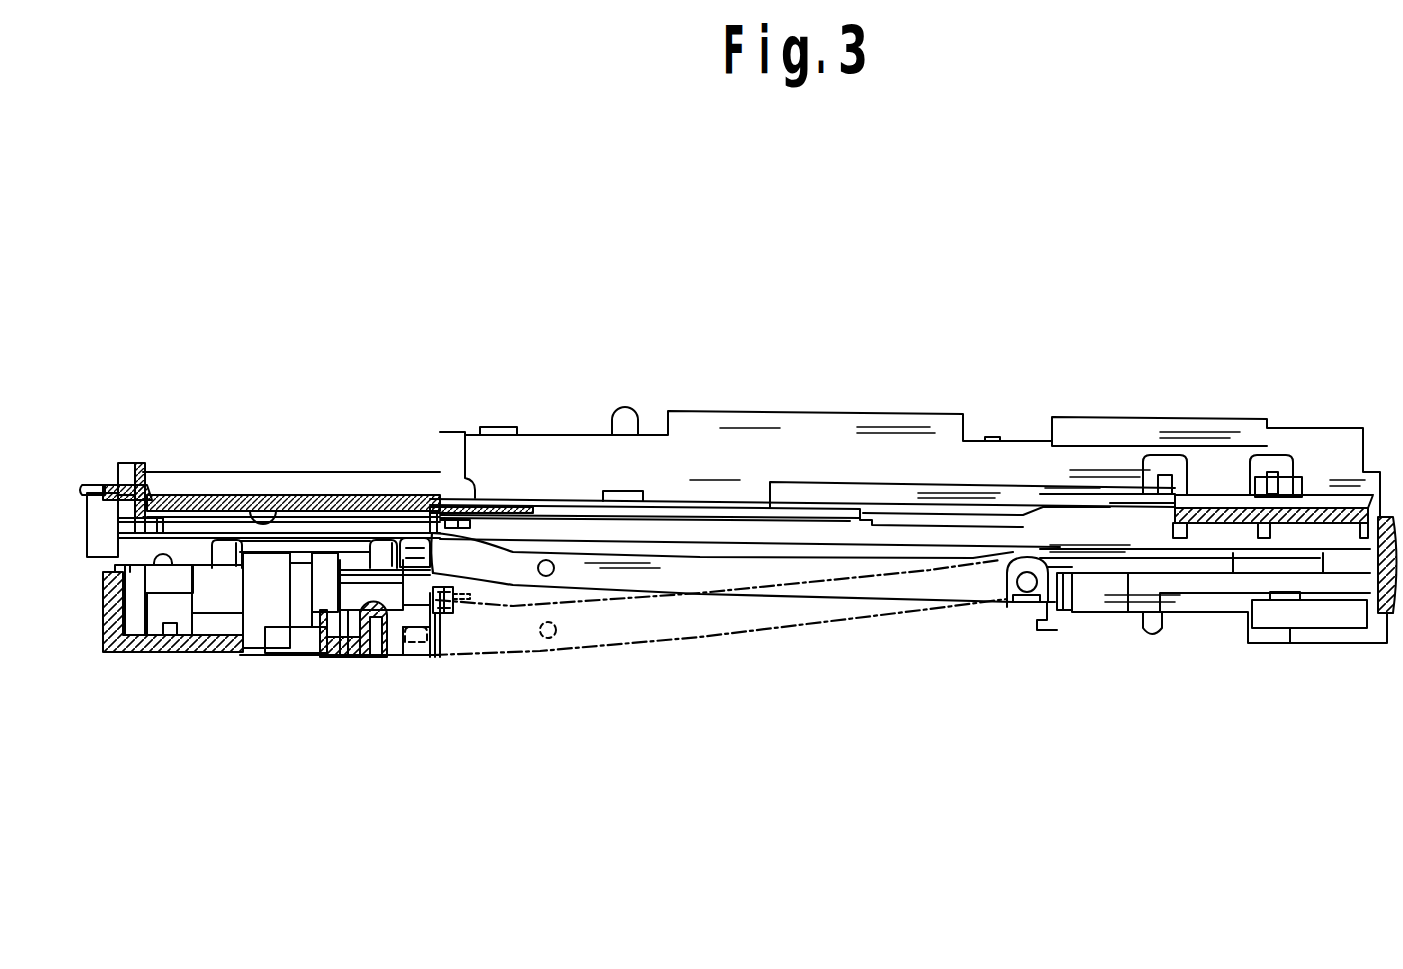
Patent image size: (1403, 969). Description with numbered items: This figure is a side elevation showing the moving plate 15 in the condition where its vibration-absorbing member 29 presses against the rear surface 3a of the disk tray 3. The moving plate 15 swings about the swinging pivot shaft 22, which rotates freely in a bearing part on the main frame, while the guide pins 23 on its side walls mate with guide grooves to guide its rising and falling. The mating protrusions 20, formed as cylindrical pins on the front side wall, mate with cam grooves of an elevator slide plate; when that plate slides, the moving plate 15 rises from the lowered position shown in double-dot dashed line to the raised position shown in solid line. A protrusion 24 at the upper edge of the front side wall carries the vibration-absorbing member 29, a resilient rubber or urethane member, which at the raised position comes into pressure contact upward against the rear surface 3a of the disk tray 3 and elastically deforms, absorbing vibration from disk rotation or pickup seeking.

The disk tray 3 is at (188, 472).
The rear surface of the disk tray 3a is at (255, 497).
The moving plate 15 is at (710, 573).
The mating protrusion 20 is at (412, 545).
The swinging pivot shaft 22 is at (1018, 587).
The guide pin 23 is at (552, 574).
The protrusion 24 is at (465, 500).
The vibration-absorbing member 29 is at (437, 530).